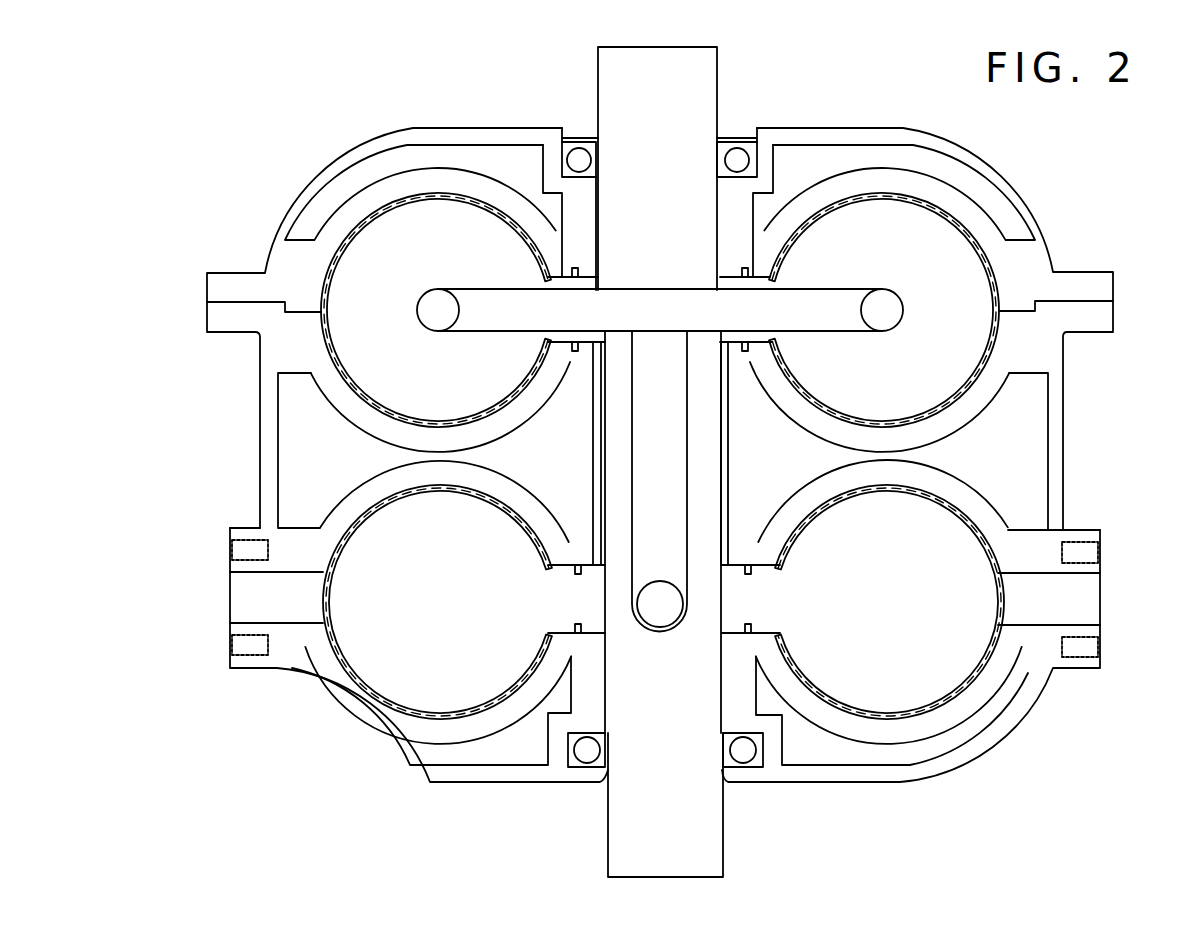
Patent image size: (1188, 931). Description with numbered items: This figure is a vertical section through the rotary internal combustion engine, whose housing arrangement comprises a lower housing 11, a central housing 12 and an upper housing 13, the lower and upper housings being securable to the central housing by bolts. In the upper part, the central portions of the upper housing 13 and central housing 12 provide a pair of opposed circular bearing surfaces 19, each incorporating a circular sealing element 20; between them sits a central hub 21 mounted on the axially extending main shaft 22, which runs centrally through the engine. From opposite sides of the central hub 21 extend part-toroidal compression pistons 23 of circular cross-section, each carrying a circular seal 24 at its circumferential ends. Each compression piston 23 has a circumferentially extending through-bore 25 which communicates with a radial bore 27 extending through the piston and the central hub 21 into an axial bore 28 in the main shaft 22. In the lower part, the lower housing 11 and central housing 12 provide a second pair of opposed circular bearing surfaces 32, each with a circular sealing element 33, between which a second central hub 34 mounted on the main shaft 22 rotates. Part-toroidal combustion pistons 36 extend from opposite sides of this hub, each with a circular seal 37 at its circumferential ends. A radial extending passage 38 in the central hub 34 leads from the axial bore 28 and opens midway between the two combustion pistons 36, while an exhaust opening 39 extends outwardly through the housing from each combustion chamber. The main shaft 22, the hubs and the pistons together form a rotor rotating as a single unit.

The lower housing 11 is at (1047, 693).
The central housing 12 is at (1065, 425).
The upper housing 13 is at (1053, 250).
The circular bearing surfaces 19 is at (771, 262).
The circular sealing element 20 is at (572, 540).
The central hub 21 is at (728, 283).
The main shaft 22 is at (636, 115).
The compression pistons 23 is at (412, 270).
The circular seal 24 is at (418, 193).
The through-bore 25 is at (432, 311).
The radial bore 27 is at (754, 326).
The axial bore 28 is at (639, 370).
The circular bearing surfaces 32 is at (740, 567).
The circular sealing element 33 is at (575, 545).
The central hub 34 is at (556, 613).
The combustion pistons 36 is at (422, 615).
The circular seal 37 is at (395, 710).
The radial extending passage 38 is at (644, 617).
The exhaust opening 39 is at (252, 598).